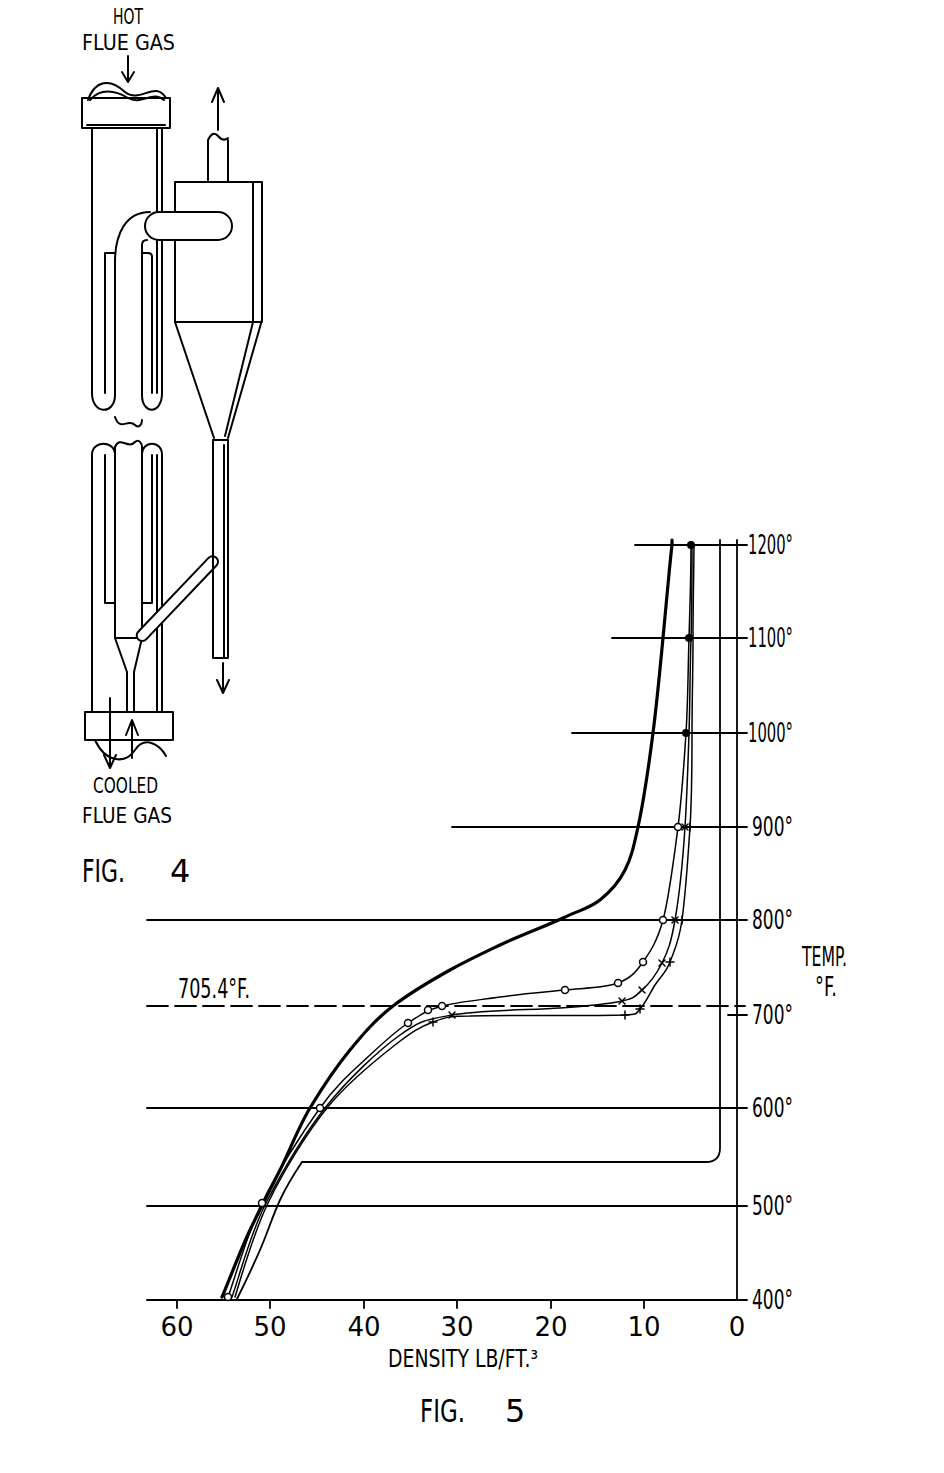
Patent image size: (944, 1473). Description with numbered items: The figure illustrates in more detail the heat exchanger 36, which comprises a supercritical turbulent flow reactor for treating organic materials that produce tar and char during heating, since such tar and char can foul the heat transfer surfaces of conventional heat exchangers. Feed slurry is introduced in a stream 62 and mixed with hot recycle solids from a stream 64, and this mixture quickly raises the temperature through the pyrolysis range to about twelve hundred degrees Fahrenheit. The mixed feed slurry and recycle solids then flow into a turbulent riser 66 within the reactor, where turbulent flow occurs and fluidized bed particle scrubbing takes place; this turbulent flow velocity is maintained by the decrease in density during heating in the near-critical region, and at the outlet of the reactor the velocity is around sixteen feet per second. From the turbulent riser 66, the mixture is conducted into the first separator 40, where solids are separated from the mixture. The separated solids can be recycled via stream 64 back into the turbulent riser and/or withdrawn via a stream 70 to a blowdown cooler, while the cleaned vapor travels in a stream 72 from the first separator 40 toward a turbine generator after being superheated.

The heat exchanger 36 is at (309, 390).
The first separator 40 is at (235, 292).
The stream 62 is at (133, 705).
The stream 64 is at (195, 585).
The turbulent riser 66 is at (125, 488).
The stream 70 is at (228, 628).
The stream 72 is at (232, 167).